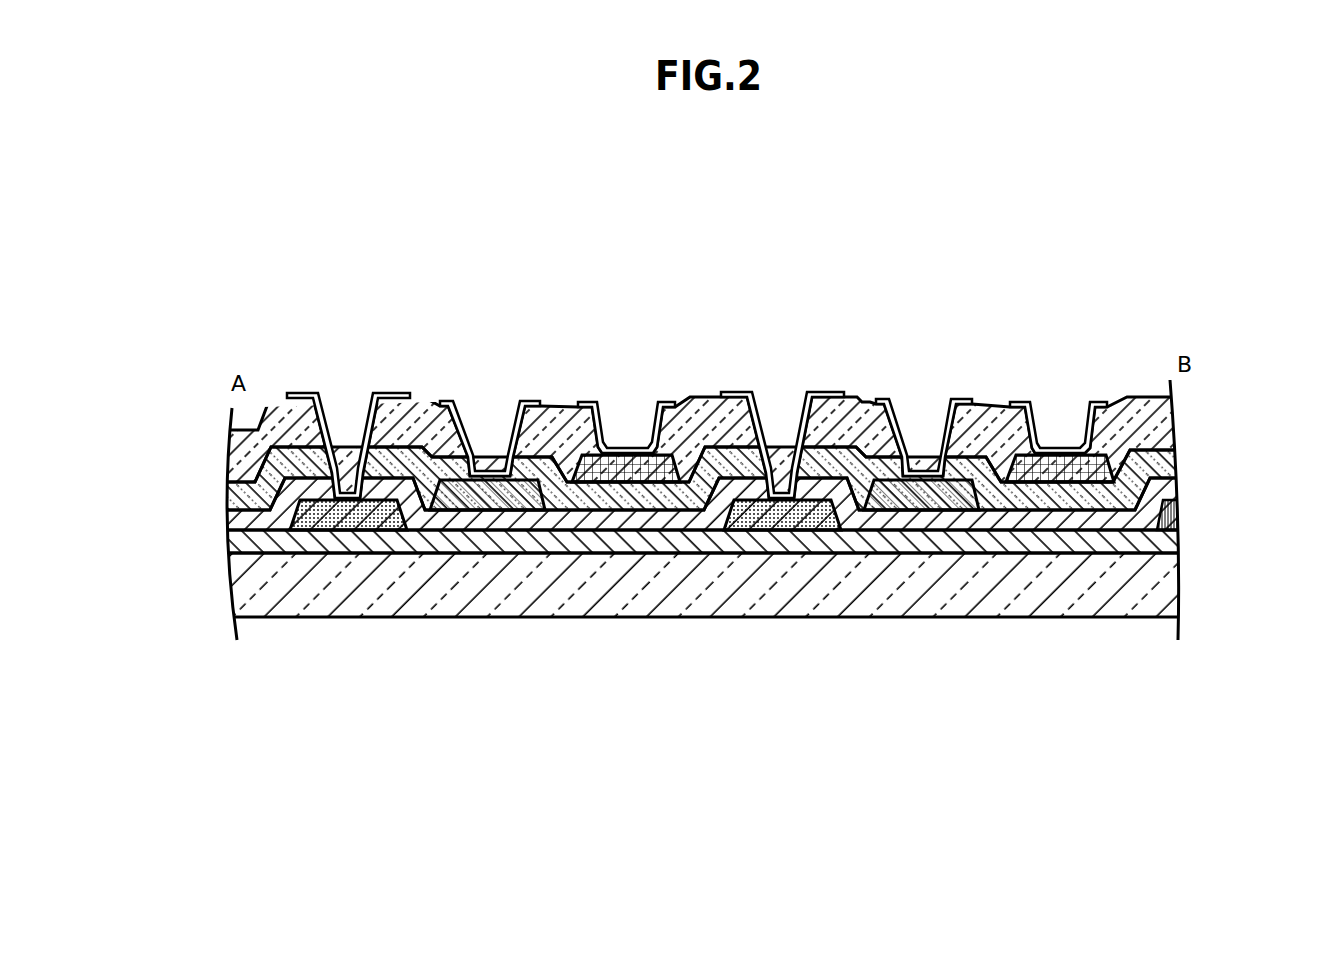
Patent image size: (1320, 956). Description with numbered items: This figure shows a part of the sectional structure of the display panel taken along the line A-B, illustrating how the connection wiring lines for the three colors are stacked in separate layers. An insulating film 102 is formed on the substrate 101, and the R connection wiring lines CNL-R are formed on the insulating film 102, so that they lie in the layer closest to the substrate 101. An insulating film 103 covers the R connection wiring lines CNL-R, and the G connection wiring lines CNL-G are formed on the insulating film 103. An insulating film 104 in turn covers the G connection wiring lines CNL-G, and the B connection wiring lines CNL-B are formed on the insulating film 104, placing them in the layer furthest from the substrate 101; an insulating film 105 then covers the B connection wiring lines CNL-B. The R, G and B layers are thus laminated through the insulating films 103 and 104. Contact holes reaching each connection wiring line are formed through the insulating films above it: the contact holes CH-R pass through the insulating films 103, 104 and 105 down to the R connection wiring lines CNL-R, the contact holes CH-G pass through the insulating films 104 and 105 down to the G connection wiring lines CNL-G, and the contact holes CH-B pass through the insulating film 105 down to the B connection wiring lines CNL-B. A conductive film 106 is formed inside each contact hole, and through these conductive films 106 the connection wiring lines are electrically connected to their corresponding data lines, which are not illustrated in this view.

The substrate 101 is at (245, 592).
The insulating film 102 is at (245, 548).
The insulating film 103 is at (243, 519).
The insulating film 104 is at (240, 487).
The insulating film 105 is at (243, 445).
The conductive film 106 is at (1103, 400).
The contact hole CH-R is at (342, 388).
The contact hole CH-G is at (486, 388).
The contact hole CH-B is at (624, 388).
The R connection wiring line CNL-R is at (350, 515).
The G connection wiring line CNL-G is at (488, 495).
The B connection wiring line CNL-B is at (627, 470).